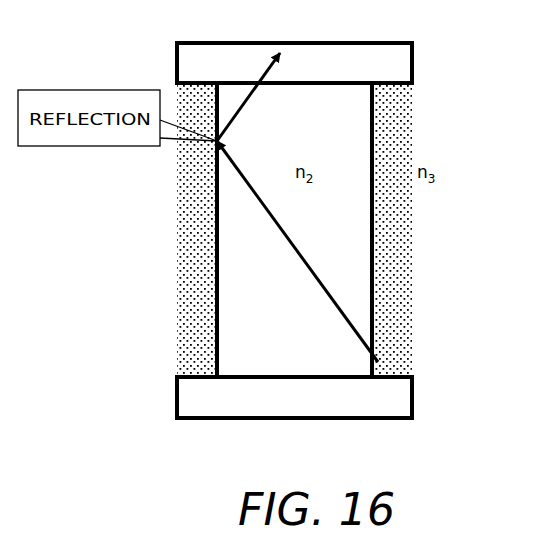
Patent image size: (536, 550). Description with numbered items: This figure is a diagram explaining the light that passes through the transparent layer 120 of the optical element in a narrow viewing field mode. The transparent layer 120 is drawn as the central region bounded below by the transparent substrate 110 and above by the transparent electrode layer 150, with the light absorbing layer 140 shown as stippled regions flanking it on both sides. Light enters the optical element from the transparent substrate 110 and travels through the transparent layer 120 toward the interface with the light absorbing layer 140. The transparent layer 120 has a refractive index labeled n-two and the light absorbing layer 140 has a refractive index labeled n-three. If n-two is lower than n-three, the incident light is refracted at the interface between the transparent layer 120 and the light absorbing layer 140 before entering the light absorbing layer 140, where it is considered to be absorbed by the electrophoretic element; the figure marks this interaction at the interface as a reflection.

The transparent electrode layer 150 is at (403, 66).
The transparent substrate 110 is at (403, 410).
The light absorbing layer 140 is at (397, 249).
The transparent layer 120 is at (298, 362).